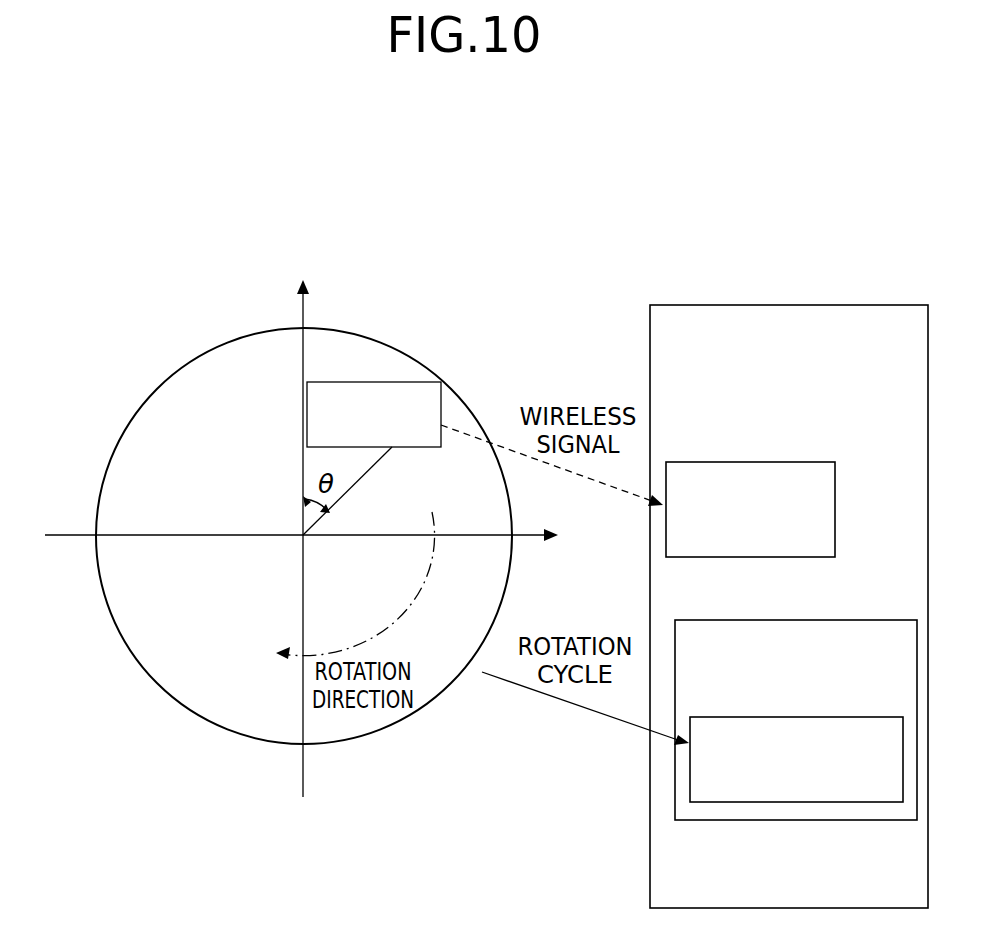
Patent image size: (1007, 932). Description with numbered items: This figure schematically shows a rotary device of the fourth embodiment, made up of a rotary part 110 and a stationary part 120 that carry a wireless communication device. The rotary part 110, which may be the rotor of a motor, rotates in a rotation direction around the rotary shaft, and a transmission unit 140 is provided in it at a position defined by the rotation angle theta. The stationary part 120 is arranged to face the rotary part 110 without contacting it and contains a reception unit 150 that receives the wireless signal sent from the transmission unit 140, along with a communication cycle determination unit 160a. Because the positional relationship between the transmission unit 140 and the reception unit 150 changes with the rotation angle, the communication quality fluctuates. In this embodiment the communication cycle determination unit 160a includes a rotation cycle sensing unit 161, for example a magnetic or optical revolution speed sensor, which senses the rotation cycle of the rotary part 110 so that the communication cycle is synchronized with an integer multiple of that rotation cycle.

The rotary part 110 is at (215, 345).
The transmission unit 140 is at (398, 382).
The stationary part 120 is at (698, 305).
The reception unit 150 is at (762, 462).
The communication cycle determination unit 160a is at (808, 620).
The rotation cycle sensing unit 161 is at (753, 803).